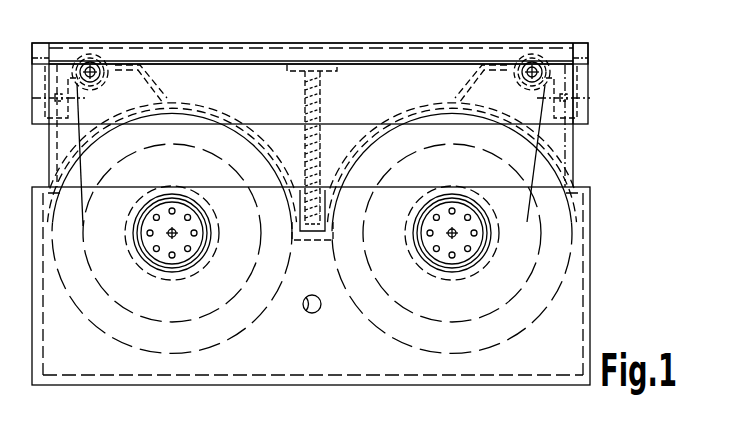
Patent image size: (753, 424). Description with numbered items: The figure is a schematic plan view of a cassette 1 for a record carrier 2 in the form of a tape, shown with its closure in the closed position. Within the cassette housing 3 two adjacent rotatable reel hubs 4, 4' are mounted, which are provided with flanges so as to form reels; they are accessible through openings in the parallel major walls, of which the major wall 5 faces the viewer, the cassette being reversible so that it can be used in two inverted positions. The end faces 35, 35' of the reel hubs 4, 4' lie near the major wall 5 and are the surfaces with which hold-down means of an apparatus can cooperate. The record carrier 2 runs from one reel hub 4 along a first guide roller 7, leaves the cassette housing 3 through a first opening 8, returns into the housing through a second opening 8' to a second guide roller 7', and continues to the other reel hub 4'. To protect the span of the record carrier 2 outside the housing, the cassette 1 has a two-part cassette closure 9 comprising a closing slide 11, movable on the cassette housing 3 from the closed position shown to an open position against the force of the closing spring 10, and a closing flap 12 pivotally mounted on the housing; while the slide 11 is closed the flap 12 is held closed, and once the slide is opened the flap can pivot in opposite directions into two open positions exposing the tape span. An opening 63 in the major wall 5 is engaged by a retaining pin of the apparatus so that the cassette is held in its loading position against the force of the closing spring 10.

The cassette 1 is at (600, 178).
The record carrier 2 is at (538, 145).
The cassette housing 3 is at (592, 278).
The reel hub 4 is at (172, 228).
The reel hub 4' is at (452, 228).
The major wall 5 is at (68, 353).
The first guide roller 7 is at (99, 154).
The second guide roller 7' is at (536, 117).
The first opening 8 is at (98, 52).
The second opening 8' is at (515, 52).
The cassette closure 9 is at (580, 34).
The closing spring 10 is at (318, 134).
The closing slide 11 is at (589, 113).
The closing flap 12 is at (228, 43).
The end face 35 is at (172, 246).
The end face 35' is at (452, 246).
The opening 63 is at (306, 313).